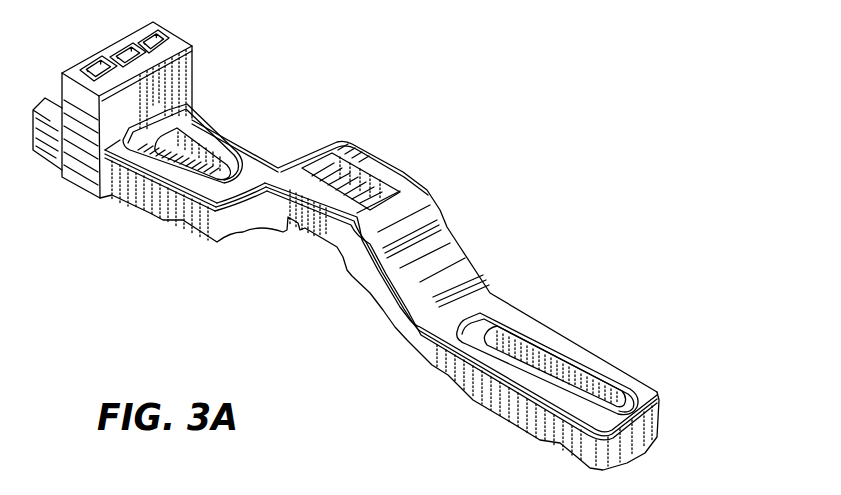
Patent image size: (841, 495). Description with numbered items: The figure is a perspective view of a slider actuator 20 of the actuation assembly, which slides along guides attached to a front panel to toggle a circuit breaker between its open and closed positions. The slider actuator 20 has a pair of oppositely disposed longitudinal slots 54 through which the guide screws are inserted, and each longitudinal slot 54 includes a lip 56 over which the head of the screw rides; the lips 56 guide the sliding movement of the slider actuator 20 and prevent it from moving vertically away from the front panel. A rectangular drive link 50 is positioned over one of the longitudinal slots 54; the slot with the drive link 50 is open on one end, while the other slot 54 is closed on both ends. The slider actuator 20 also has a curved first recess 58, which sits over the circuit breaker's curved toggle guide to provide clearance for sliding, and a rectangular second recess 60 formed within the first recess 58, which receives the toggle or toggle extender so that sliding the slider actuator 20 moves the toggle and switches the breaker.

The slider actuator 20 is at (418, 271).
The drive link 50 is at (196, 59).
The longitudinal slot 54 is at (212, 145).
The lip 56 is at (173, 158).
The first recess 58 is at (380, 325).
The second recess 60 is at (310, 245).